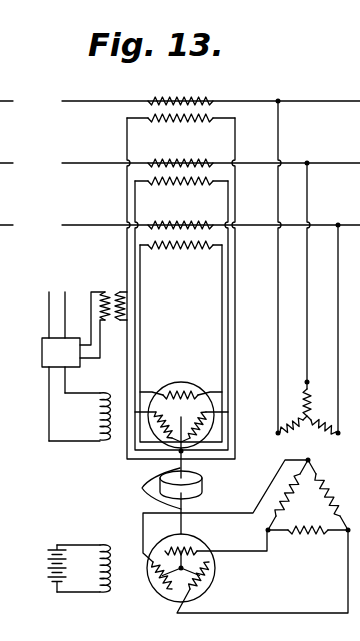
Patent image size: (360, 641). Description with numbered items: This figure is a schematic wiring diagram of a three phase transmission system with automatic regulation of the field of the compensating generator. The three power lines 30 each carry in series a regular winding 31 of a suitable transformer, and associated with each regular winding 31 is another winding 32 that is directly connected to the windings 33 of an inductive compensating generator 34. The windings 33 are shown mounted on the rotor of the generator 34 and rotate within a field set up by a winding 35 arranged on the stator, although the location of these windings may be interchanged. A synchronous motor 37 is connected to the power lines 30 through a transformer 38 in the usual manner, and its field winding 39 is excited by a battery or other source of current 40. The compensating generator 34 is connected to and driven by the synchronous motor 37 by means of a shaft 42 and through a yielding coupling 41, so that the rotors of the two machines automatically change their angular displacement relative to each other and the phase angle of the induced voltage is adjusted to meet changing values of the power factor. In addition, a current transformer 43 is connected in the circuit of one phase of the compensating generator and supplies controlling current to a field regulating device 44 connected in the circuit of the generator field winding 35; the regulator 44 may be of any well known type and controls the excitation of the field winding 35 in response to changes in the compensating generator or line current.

The power lines 30 is at (78, 101).
The regular windings 31 is at (186, 100).
The other windings 32 is at (190, 121).
The windings 33 is at (212, 392).
The inductive compensating generator 34 is at (153, 392).
The winding 35 is at (108, 442).
The synchronous motor 37 is at (167, 601).
The transformer 38 is at (318, 451).
The field winding 39 is at (105, 592).
The battery 40 is at (49, 547).
The yielding coupling 41 is at (203, 486).
The shaft 42 is at (142, 488).
The current transformer 43 is at (113, 285).
The field regulating device 44 is at (42, 352).